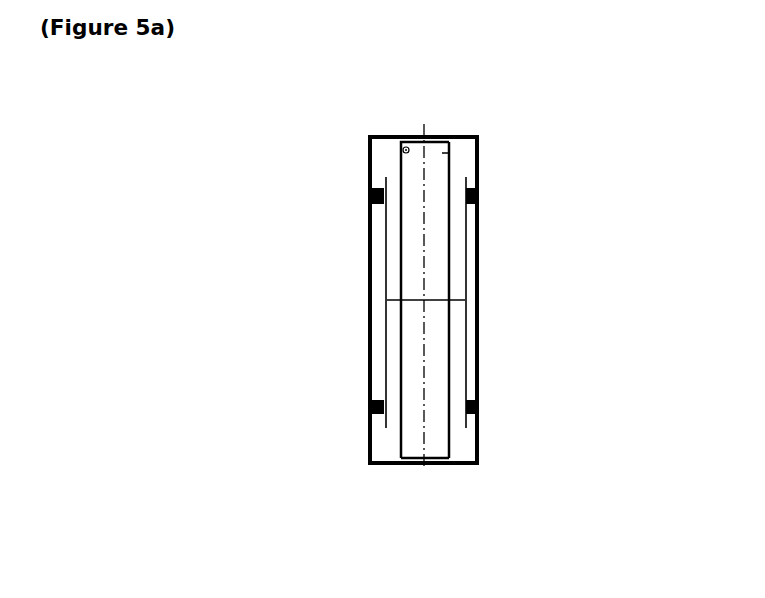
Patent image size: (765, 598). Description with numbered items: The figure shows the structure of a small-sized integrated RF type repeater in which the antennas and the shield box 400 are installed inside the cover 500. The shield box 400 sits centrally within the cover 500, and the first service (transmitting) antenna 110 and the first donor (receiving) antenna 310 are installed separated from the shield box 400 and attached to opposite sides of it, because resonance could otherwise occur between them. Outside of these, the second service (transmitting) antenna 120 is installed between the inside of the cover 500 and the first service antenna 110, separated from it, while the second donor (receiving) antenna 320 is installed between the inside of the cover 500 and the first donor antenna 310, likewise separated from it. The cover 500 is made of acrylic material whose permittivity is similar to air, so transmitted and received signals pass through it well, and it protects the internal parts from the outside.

The first service (transmitting) antenna 110 is at (452, 177).
The second service (transmitting) antenna 120 is at (470, 250).
The first donor (receiving) antenna 310 is at (398, 180).
The second donor (receiving) antenna 320 is at (383, 268).
The shield box 400 is at (446, 456).
The cover 500 is at (372, 453).